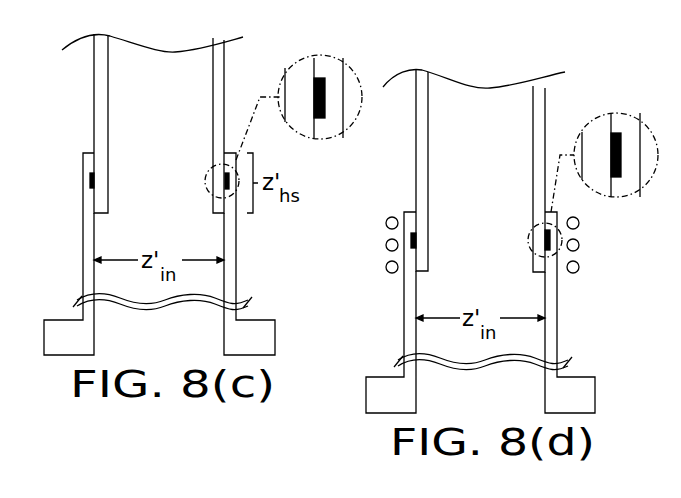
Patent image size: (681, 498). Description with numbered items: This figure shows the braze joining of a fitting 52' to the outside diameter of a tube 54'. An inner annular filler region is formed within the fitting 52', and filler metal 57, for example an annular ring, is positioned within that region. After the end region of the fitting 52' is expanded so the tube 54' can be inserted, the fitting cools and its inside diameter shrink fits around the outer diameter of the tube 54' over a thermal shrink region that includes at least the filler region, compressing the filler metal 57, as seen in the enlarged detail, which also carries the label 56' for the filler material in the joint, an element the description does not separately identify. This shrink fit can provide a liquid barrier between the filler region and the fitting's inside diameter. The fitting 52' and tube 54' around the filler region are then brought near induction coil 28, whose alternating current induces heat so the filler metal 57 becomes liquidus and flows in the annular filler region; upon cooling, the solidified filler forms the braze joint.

In FIG. 8C, the fitting 52' is at (223, 241).
In FIG. 8D, the fitting 52' is at (456, 312).
In FIG. 8C, the tube 54' is at (226, 123).
In FIG. 8D, the tube 54' is at (518, 171).
In FIG. 8C, the sensor element 56' is at (352, 78).
In FIG. 8C, the filler metal 57 is at (88, 181).
In FIG. 8D, the filler metal 57 is at (416, 237).
In FIG. 8D, the induction coil 28 is at (587, 215).